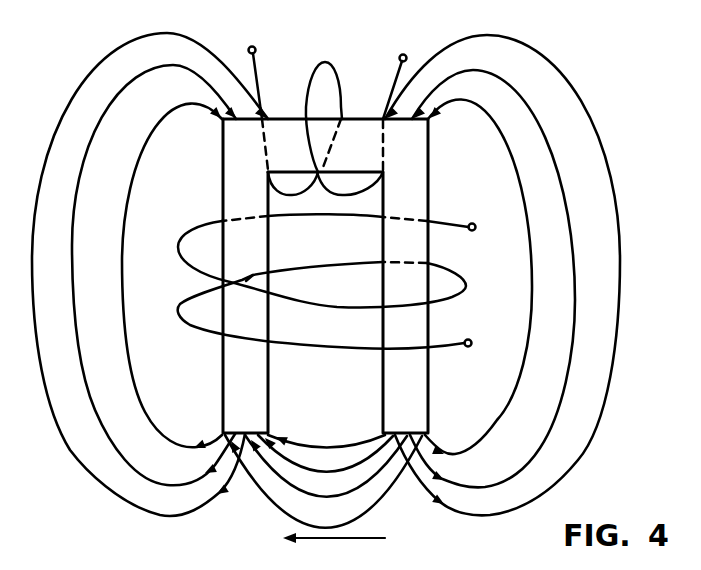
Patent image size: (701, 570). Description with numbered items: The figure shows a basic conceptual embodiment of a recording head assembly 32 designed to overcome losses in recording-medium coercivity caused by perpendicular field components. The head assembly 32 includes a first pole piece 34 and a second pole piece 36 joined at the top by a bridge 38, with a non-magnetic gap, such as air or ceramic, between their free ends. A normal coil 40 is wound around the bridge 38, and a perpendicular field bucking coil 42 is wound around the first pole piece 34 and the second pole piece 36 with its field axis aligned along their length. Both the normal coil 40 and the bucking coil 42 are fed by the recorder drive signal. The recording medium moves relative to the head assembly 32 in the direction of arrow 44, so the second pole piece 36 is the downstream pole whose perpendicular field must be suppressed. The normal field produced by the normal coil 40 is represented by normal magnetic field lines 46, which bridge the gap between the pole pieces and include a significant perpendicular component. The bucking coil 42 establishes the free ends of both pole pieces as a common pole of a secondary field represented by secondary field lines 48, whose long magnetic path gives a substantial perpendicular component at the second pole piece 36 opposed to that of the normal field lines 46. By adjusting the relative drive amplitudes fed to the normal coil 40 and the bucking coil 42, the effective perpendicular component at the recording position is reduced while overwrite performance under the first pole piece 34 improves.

The recording head assembly 32 is at (291, 78).
The first pole piece 34 is at (428, 177).
The second pole piece 36 is at (222, 373).
The bridge 38 is at (357, 118).
The normal coil 40 is at (397, 70).
The perpendicular field bucking coil 42 is at (445, 350).
The arrow 44 is at (358, 543).
The normal magnetic field lines 46 is at (304, 468).
The secondary field lines 48 is at (157, 428).